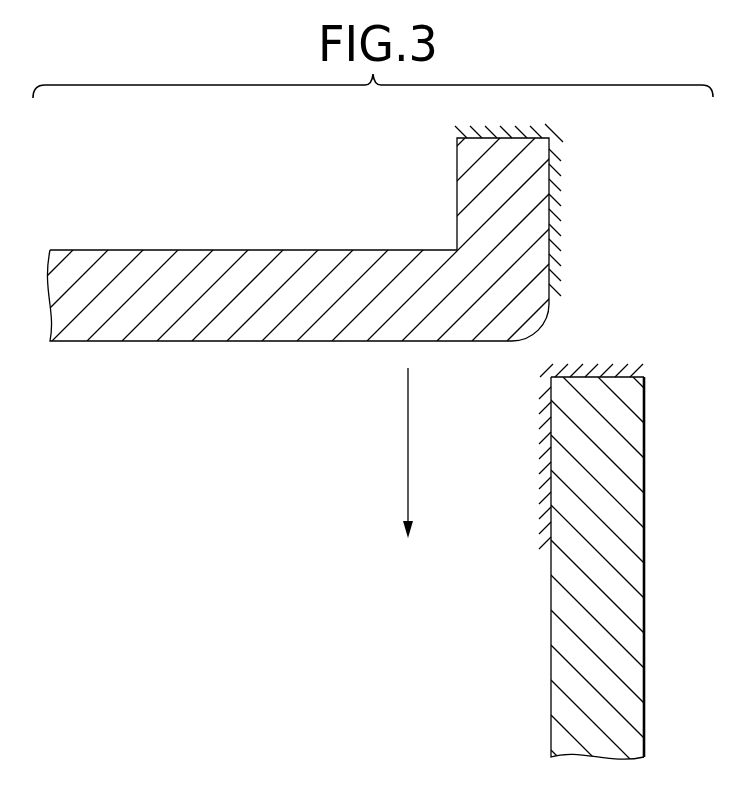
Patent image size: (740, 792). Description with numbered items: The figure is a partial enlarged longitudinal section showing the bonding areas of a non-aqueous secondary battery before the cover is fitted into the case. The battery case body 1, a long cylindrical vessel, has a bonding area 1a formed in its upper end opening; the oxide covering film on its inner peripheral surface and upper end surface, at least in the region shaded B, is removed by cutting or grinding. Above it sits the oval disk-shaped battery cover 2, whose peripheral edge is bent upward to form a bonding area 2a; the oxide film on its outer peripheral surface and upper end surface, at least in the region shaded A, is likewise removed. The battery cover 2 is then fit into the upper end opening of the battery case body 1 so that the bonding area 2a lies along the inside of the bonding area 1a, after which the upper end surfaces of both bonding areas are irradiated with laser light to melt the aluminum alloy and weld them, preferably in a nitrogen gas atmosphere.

The battery case body 1 is at (672, 613).
The bonding area of the battery case body 1a is at (633, 396).
The battery cover 2 is at (245, 215).
The bonding area of the battery cover 2a is at (467, 155).
The shaded area on the battery cover bonding area A is at (587, 145).
The shaded area on the battery case body bonding area B is at (515, 389).